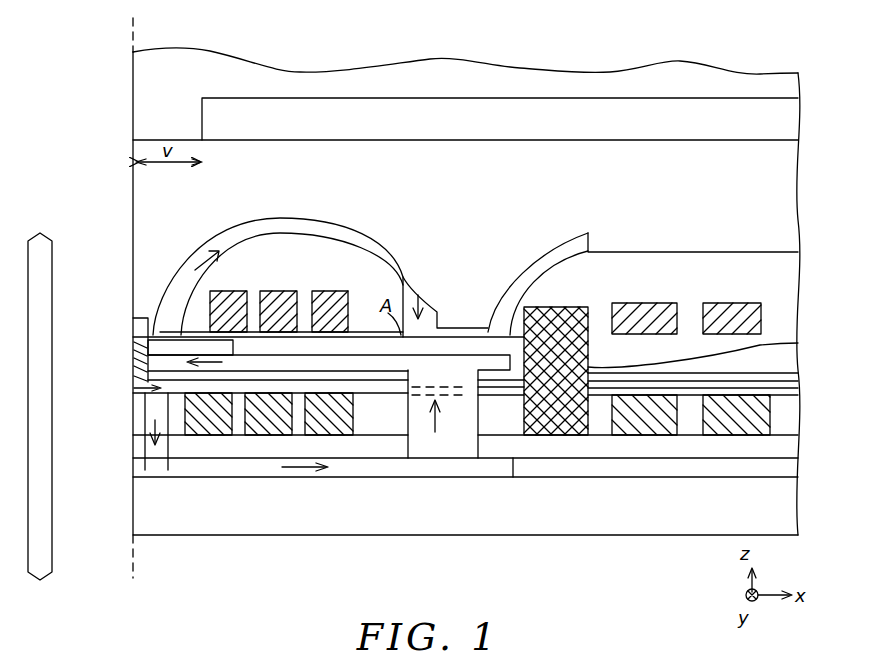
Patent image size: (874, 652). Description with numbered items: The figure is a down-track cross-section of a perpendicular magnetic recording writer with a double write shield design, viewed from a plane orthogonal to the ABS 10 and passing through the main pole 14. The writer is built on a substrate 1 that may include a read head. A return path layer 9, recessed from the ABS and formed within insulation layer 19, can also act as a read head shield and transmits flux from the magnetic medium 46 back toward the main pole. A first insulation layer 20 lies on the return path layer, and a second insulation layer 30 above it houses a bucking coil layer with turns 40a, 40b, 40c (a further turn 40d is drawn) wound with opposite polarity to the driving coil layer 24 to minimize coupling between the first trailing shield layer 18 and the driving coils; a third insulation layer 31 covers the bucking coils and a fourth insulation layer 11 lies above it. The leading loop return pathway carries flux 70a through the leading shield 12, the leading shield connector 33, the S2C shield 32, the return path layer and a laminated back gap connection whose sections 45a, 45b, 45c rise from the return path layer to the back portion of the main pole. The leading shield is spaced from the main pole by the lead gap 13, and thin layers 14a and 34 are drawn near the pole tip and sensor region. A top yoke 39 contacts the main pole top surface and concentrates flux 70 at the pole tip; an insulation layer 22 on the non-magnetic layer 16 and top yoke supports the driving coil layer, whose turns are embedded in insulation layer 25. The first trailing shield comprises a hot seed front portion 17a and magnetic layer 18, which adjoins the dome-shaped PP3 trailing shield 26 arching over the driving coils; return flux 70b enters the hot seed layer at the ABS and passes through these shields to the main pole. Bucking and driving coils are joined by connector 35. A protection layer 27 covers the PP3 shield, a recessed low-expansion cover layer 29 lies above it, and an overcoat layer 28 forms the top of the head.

The substrate 1 is at (780, 504).
The return path layer 9 is at (157, 468).
The ABS 10 is at (133, 18).
The fourth insulation layer 11 is at (366, 377).
The leading shield 12 is at (142, 382).
The lead gap 13 is at (140, 367).
The main pole 14 is at (488, 328).
The insulating layer front portion 14a is at (140, 358).
The non-magnetic layer 16 is at (158, 316).
The hot seed layer front portion 17a is at (148, 353).
The first trailing shield layer 18 is at (150, 347).
The insulation layer 19 is at (140, 467).
The first insulation layer 20 is at (140, 447).
The insulation layer 22 is at (183, 307).
The driving coil layer 24 is at (237, 300).
The insulation layer 25 is at (200, 297).
The PP3 trailing shield 26 is at (181, 276).
The protection layer 27 is at (150, 203).
The overcoat layer 28 is at (142, 97).
The cover layer 29 is at (790, 118).
The second insulation layer 30 is at (150, 402).
The third insulation layer 31 is at (391, 388).
The S2C shield 32 is at (143, 418).
The leading shield connector 33 is at (140, 388).
The sensor stack layer 34 is at (786, 384).
The connector 35 is at (798, 345).
The top yoke 39 is at (453, 346).
The bucking coil turn 40a is at (203, 422).
The bucking coil turn 40b is at (268, 425).
The bucking coil turn 40c is at (342, 422).
The lower coil turn 40d is at (752, 423).
The back gap connection lower section 45a is at (457, 450).
The back gap connection middle section 45b is at (468, 381).
The back gap connection uppermost section 45c is at (468, 388).
The magnetic medium 46 is at (40, 582).
The magnetic flux 70 is at (278, 363).
The leading loop return flux 70a is at (305, 553).
The trailing shield return flux 70b is at (433, 52).